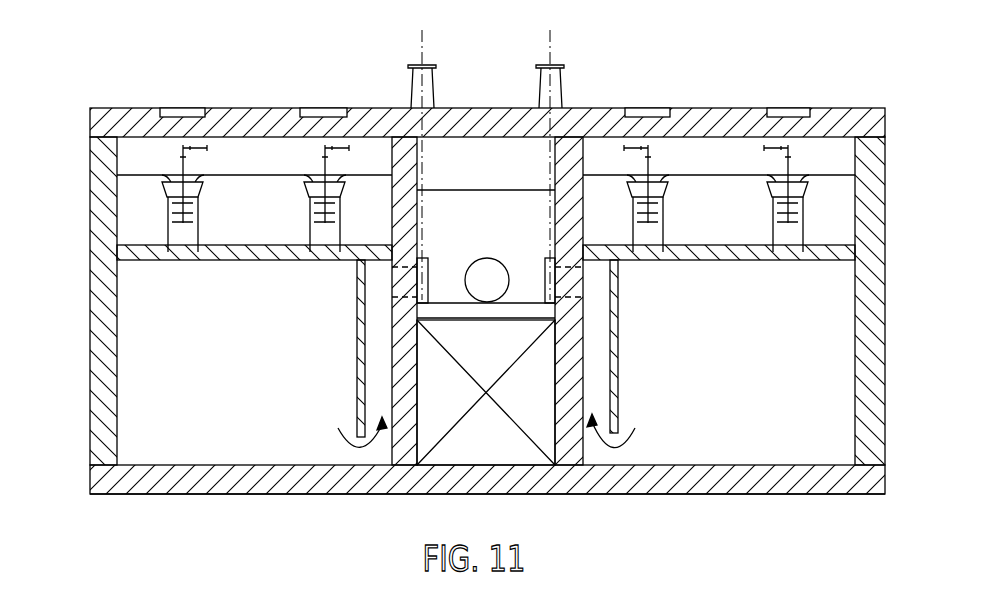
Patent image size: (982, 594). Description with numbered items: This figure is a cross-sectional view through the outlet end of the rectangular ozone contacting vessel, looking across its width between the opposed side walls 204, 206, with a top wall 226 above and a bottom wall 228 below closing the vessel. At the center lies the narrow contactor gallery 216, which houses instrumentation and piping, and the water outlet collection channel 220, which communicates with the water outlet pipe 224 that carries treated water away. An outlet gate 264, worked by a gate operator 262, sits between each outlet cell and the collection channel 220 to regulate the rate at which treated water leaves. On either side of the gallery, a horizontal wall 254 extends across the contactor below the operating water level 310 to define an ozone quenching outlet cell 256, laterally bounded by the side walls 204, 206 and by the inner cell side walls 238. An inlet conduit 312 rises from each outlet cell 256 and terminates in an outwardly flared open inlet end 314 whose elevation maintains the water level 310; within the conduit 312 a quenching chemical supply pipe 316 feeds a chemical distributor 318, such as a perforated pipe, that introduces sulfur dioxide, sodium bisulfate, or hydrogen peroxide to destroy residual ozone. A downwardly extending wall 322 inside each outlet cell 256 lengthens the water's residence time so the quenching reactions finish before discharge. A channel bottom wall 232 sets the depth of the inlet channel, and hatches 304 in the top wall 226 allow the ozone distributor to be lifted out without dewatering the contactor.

The side wall 204 is at (113, 372).
The side wall 206 is at (860, 368).
The contactor gallery 216 is at (475, 465).
The water outlet collection channel 220 is at (487, 147).
The water outlet pipe 224 is at (504, 266).
The top wall 226 is at (697, 112).
The bottom wall 228 is at (652, 490).
The channel bottom wall 232 is at (356, 393).
The cell side wall 238 is at (393, 360).
The horizontal wall 254 is at (247, 262).
The ozone quenching outlet cell 256 is at (240, 458).
The gate operator 262 is at (411, 80).
The outlet gate 264 is at (430, 265).
The hatch 304 is at (790, 105).
The water level 310 is at (750, 172).
The inlet conduit 312 is at (310, 225).
The outwardly flared open inlet end 314 is at (770, 188).
The quenching chemical supply pipe 316 is at (182, 165).
The chemical distributor 318 is at (310, 202).
The downwardly extending wall 322 is at (620, 393).